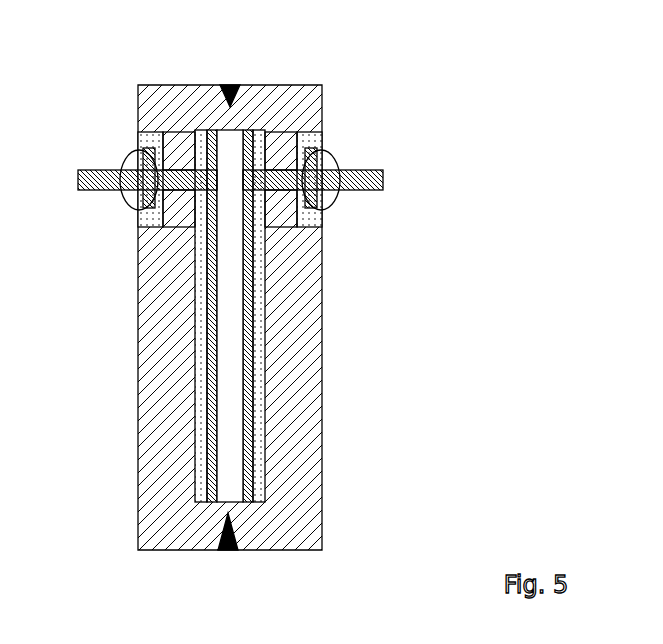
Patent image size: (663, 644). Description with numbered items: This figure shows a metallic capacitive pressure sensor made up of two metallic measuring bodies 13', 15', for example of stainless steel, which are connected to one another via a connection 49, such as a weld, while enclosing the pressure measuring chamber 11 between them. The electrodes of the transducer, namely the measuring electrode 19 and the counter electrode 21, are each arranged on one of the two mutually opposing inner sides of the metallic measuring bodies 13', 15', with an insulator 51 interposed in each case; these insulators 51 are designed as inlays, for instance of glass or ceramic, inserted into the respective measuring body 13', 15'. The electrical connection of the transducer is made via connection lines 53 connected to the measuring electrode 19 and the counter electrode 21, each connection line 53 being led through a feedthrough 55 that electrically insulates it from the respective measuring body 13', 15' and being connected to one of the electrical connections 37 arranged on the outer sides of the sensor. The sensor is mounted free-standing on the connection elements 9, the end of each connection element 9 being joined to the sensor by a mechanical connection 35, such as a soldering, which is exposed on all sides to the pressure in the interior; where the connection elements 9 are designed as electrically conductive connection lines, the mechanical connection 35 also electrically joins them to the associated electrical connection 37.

The connection element 9 is at (87, 170).
The pressure measuring chamber 11 is at (230, 345).
The measuring body 13' is at (151, 317).
The measuring body 15' is at (307, 317).
The measuring electrode 19 is at (207, 302).
The counter electrode 21 is at (253, 305).
The mechanical connection 35 is at (130, 188).
The electrical connection 37 is at (140, 168).
The connection 49 is at (236, 550).
The insulator 51 is at (210, 422).
The connection line 53 is at (145, 227).
The feedthrough 55 is at (168, 150).